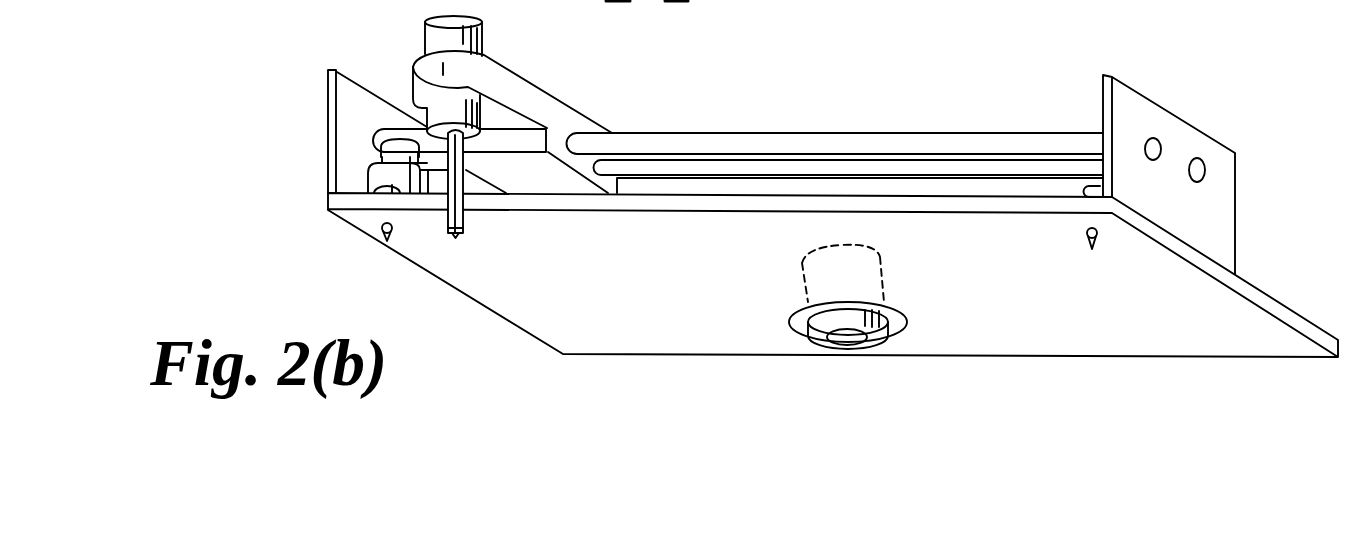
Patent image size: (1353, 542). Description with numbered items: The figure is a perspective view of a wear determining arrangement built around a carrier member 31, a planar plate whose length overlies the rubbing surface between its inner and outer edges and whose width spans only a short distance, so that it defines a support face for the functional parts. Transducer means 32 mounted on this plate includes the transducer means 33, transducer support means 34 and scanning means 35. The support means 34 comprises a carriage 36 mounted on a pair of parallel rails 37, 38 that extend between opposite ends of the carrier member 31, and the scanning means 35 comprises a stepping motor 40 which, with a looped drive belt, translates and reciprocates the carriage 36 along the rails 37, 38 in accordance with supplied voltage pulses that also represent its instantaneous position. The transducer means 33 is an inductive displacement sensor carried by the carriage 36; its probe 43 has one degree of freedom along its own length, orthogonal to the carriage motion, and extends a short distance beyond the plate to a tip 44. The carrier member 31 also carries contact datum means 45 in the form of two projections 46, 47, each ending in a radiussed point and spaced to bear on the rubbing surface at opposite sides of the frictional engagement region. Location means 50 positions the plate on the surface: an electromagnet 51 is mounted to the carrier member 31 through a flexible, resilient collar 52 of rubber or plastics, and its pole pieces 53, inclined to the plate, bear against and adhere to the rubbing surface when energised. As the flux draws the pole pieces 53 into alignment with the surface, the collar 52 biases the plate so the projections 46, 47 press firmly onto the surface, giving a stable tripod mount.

The carrier member 31 is at (1255, 291).
The transducer means 32 is at (406, 46).
The transducer means 33 is at (453, 42).
The transducer support means 34 is at (538, 78).
The scanning means 35 is at (369, 117).
The carriage 36 is at (567, 118).
The rail 37 is at (932, 167).
The rail 38 is at (1002, 144).
The stepping motor 40 is at (368, 172).
The probe 43 is at (466, 215).
The tip 44 is at (452, 238).
The contact datum means 45 is at (380, 239).
The projection 46 is at (1098, 229).
The projection 47 is at (382, 228).
The location means 50 is at (776, 310).
The electromagnet 51 is at (831, 256).
The collar 52 is at (898, 321).
The pole pieces 53 is at (836, 345).